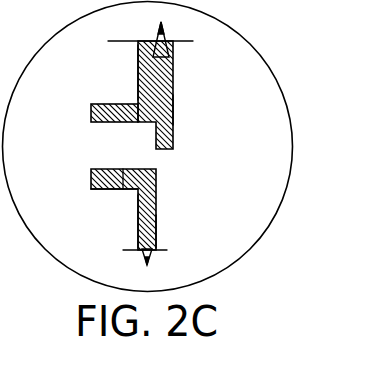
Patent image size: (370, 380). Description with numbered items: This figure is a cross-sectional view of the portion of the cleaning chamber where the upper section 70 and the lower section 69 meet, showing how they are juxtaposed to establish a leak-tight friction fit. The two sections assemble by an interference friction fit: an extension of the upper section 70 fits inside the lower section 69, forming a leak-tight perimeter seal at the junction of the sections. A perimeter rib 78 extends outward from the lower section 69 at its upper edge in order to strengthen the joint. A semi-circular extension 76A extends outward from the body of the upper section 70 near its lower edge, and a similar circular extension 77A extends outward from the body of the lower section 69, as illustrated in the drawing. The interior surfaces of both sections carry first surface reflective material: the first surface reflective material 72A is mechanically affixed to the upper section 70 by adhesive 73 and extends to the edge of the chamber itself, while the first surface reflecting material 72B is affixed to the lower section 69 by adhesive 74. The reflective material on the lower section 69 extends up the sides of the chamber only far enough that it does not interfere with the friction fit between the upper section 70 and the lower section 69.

The lower section 69 is at (140, 224).
The upper section 70 is at (138, 63).
The first surface reflective material 72A is at (155, 86).
The first surface reflecting material 72B is at (136, 203).
The adhesive 73 is at (173, 109).
The adhesive 74 is at (156, 230).
The semi-circular extension 76A is at (125, 103).
The circular extension 77A is at (113, 190).
The perimeter rib 78 is at (123, 169).